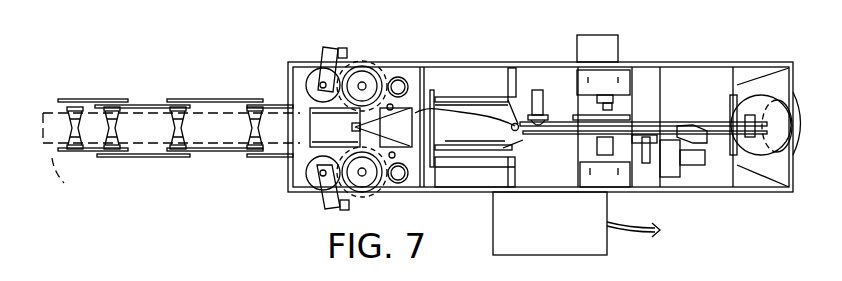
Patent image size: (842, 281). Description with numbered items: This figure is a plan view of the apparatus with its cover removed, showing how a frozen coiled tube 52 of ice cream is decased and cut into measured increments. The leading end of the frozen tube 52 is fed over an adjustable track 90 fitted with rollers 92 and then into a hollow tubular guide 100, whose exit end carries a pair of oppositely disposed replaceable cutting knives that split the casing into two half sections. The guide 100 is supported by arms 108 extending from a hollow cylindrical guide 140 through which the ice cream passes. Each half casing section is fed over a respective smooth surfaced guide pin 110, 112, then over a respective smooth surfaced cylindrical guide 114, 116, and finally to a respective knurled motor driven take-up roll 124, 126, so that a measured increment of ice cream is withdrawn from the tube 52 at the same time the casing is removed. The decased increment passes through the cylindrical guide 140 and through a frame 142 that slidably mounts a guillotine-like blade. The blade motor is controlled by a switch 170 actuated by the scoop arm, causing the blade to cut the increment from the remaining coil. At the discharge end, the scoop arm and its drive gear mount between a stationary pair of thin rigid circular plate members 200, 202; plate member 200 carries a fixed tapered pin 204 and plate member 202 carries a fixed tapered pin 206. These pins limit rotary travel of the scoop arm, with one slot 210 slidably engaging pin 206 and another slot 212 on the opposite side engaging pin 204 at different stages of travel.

The frozen coiled tube 52 is at (71, 170).
The adjustable track 90 is at (128, 92).
The rollers 92 is at (92, 110).
The hollow tubular guide 100 is at (310, 137).
The arms 108 is at (413, 140).
The guide pin 110 is at (390, 110).
The guide pin 112 is at (475, 174).
The cylindrical guide 114 is at (400, 78).
The cylindrical guide 116 is at (398, 180).
The take-up roll 124 is at (350, 77).
The take-up roll 126 is at (362, 176).
The hollow cylindrical guide 140 is at (524, 143).
The frame 142 is at (465, 68).
The switch 170 is at (514, 124).
The circular plate member 200 is at (637, 110).
The circular plate member 202 is at (565, 137).
The tapered pin 204 is at (548, 93).
The tapered pin 206 is at (645, 125).
The slot 210 is at (678, 138).
The slot 212 is at (660, 127).